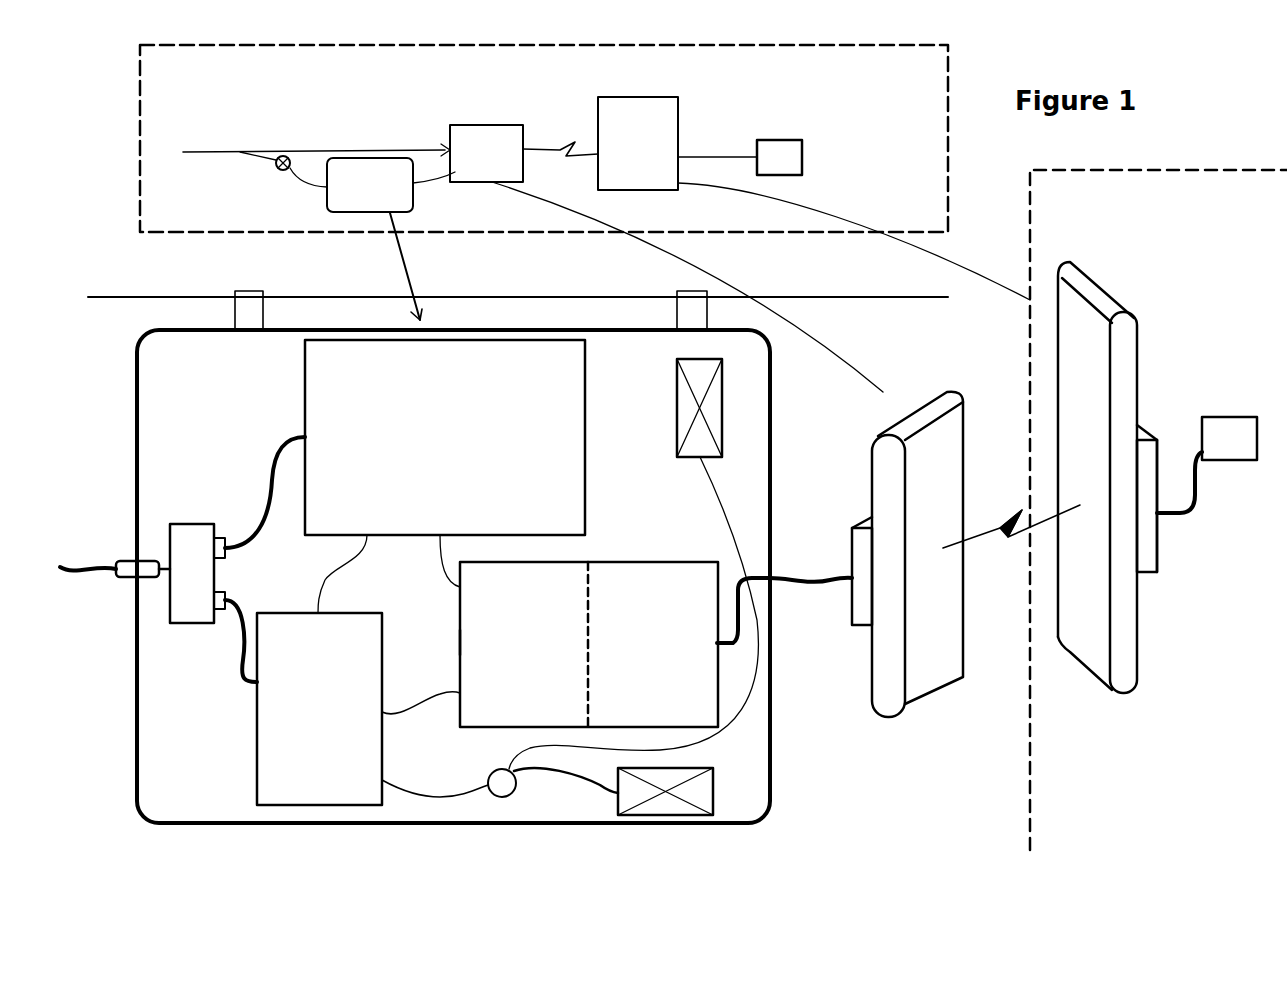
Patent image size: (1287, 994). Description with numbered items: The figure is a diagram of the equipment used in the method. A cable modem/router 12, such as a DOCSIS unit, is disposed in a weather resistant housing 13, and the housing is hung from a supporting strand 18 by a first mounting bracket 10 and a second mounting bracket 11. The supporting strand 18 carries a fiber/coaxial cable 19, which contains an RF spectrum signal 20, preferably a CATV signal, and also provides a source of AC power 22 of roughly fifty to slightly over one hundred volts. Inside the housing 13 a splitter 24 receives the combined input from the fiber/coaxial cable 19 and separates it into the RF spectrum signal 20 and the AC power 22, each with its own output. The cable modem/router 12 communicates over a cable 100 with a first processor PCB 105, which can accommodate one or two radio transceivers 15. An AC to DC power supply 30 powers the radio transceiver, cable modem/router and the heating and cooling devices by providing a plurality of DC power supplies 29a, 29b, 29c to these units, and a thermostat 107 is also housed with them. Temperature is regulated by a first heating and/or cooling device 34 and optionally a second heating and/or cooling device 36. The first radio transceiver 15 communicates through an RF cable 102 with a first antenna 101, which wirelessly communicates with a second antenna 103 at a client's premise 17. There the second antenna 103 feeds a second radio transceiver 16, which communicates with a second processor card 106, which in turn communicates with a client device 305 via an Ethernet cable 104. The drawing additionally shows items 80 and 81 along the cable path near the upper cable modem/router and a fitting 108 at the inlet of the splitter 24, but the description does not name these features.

The first mounting bracket 10 is at (237, 292).
The second mounting bracket 11 is at (677, 291).
The cable modem/router 12 is at (417, 198).
The housing 13 is at (268, 823).
The radio transceiver 15 is at (698, 562).
The second radio transceiver 16 is at (1147, 543).
The client's premise 17 is at (1210, 170).
The supporting strand 18 is at (230, 153).
The fiber/coaxial cable 19 is at (295, 190).
The RF spectrum signal 20 is at (277, 447).
The AC power 22 is at (245, 603).
The splitter 24 is at (214, 572).
The DC power supply 29a is at (323, 592).
The DC power supply 29b is at (403, 713).
The DC power supply 29c is at (422, 793).
The AC to DC power supply 30 is at (260, 780).
The first heating and/or cooling device 34 is at (677, 410).
The second heating and/or cooling device 36 is at (715, 803).
The cable tap 80 is at (297, 168).
The cable drop 81 is at (265, 162).
The cable 100 is at (438, 556).
The first antenna 101 is at (492, 128).
The RF cable 102 is at (810, 588).
The second antenna 103 is at (682, 112).
The Ethernet cable 104 is at (1200, 467).
The first processor PCB 105 is at (460, 642).
The second processor card 106 is at (1157, 532).
The thermostat 107 is at (516, 786).
The cable connector 108 is at (152, 558).
The client device 305 is at (1258, 442).